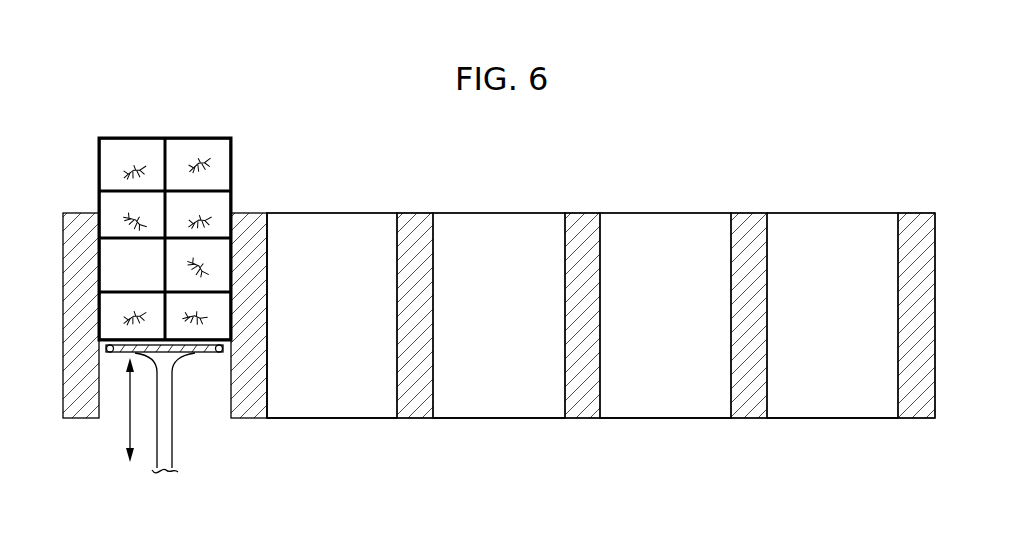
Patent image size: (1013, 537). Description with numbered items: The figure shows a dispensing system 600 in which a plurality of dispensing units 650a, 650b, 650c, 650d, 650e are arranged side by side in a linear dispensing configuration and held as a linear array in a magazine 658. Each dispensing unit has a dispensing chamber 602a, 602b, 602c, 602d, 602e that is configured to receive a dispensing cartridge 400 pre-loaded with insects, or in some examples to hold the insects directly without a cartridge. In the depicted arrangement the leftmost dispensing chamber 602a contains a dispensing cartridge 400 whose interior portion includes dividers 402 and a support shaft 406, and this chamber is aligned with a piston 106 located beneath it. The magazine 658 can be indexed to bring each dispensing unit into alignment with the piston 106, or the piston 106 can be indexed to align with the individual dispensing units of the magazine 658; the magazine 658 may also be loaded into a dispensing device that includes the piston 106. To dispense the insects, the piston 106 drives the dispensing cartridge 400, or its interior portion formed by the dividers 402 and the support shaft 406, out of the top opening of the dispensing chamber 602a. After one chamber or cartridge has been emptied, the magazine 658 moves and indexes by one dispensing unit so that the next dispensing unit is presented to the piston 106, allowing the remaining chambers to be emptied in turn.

The dispensing system 600 is at (700, 85).
The dispensing unit 650a is at (99, 210).
The dispensing unit 650b is at (350, 205).
The dispensing unit 650c is at (507, 205).
The dispensing unit 650d is at (687, 205).
The dispensing unit 650e is at (835, 205).
The magazine 658 is at (920, 216).
The dispensing chamber 602a is at (200, 407).
The dispensing chamber 602b is at (320, 405).
The dispensing chamber 602c is at (477, 403).
The dispensing chamber 602d is at (655, 403).
The dispensing chamber 602e is at (805, 405).
The dispensing cartridge 400 is at (125, 262).
The dividers 402 is at (122, 291).
The support shaft 406 is at (164, 158).
The piston 106 is at (108, 347).